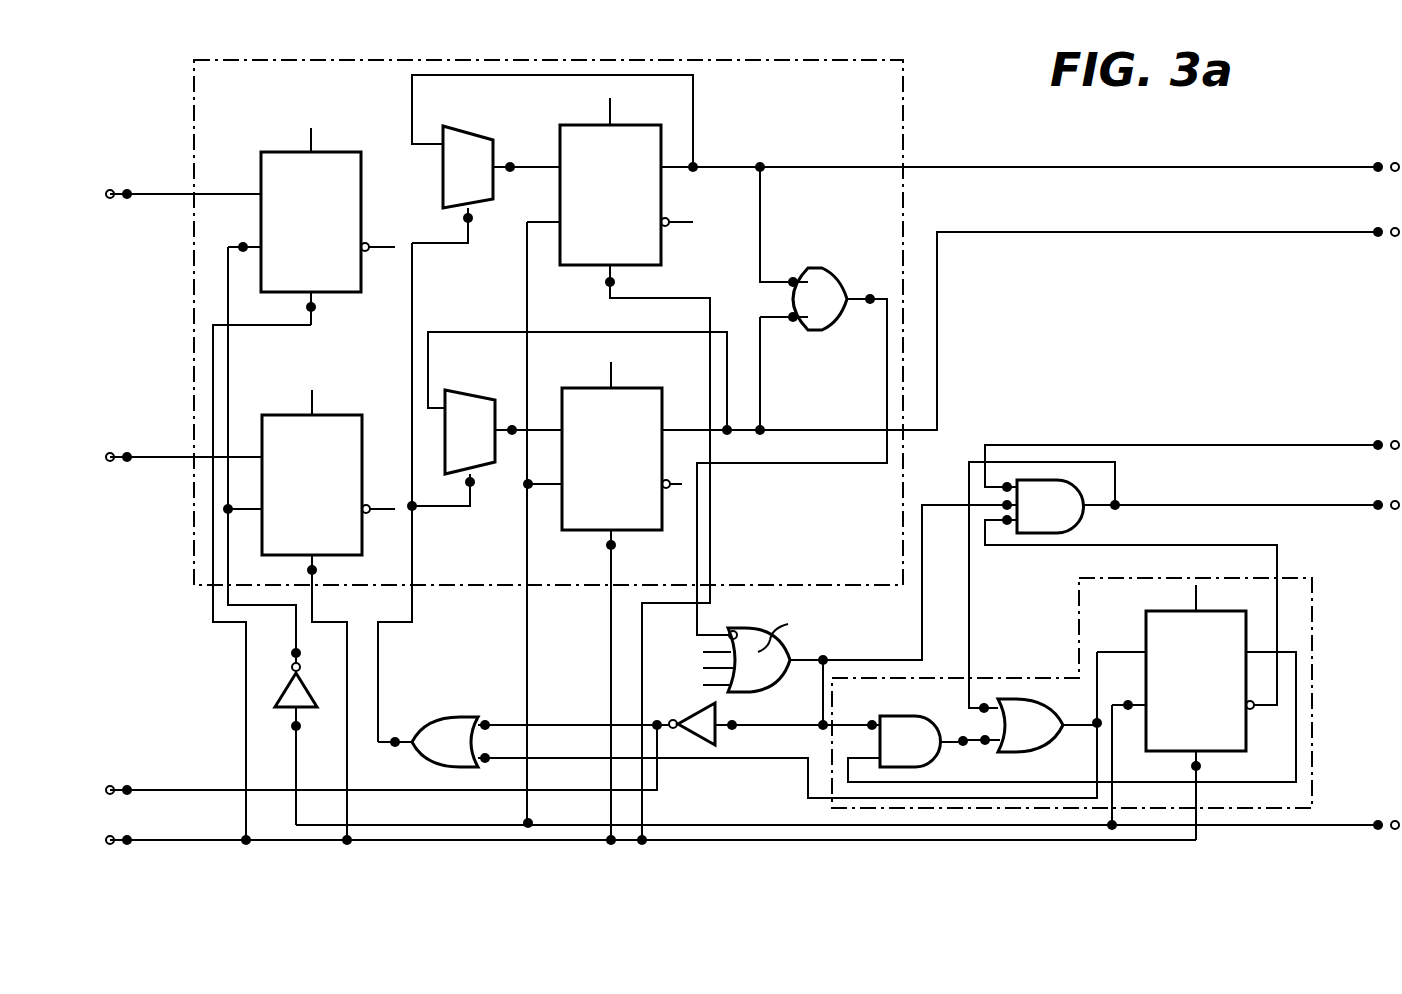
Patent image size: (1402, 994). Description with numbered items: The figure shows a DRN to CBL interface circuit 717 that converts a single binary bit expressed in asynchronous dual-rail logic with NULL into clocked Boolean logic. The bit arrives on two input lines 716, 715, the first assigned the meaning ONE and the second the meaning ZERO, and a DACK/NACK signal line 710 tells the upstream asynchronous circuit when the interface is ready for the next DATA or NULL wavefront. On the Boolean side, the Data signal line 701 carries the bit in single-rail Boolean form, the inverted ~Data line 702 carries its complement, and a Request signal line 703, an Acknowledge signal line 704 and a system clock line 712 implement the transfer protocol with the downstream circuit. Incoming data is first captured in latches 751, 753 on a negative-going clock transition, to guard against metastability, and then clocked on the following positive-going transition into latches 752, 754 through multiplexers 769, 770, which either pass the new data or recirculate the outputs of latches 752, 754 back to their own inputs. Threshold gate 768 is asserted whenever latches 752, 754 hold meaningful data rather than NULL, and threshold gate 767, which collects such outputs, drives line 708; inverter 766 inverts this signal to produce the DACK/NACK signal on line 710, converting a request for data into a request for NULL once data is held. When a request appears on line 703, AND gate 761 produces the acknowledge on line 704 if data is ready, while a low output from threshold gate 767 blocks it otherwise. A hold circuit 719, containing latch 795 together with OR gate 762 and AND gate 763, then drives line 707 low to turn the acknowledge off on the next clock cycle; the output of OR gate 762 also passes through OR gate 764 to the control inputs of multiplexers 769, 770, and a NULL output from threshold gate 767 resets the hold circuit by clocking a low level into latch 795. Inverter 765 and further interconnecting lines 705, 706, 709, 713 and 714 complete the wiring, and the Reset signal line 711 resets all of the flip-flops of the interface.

The Data signal line 701 is at (987, 166).
The ~Data signal line 702 is at (987, 232).
The Request signal line 703 is at (1197, 445).
The Acknowledge signal line 704 is at (1197, 505).
The signal line 705 is at (697, 758).
The signal line 706 is at (1046, 763).
The line 707 is at (1197, 545).
The line 708 is at (940, 500).
The clock line 709 is at (697, 543).
The DACK/NACK signal line 710 is at (225, 790).
The Reset signal line 711 is at (213, 843).
The Clock_2 signal line 712 is at (1348, 823).
The reset line 713 is at (228, 548).
The select line 714 is at (413, 548).
The second signal line 715 is at (154, 461).
The first signal line 716 is at (154, 198).
The DRN to CBL interface 717 is at (877, 94).
The hold circuit 719 is at (1080, 620).
The latch 751 is at (271, 152).
The latch 752 is at (636, 125).
The latch 753 is at (280, 415).
The latch 754 is at (645, 388).
The AND gate 761 is at (1040, 480).
The OR gate 762 is at (1032, 699).
The AND gate 763 is at (897, 716).
The OR gate 764 is at (440, 717).
The inverter 765 is at (305, 683).
The inverter 766 is at (690, 714).
The threshold gate 767 is at (763, 685).
The threshold gate 768 is at (830, 270).
The multiplexer 769 is at (487, 140).
The multiplexer 770 is at (475, 390).
The latch 795 is at (1148, 611).